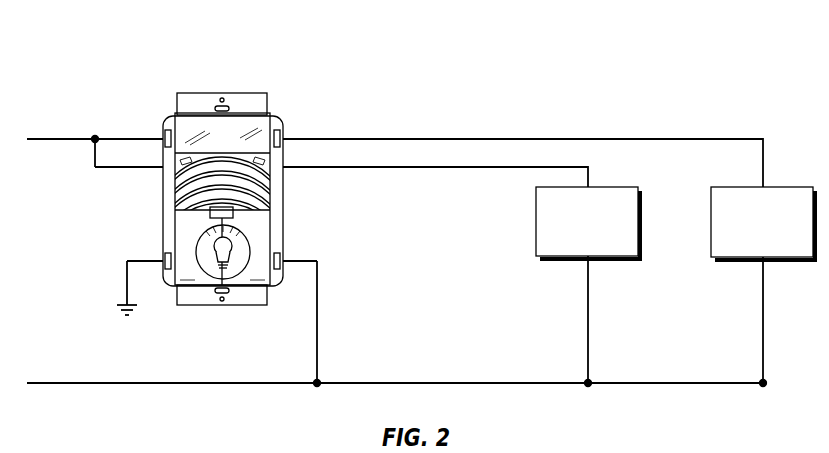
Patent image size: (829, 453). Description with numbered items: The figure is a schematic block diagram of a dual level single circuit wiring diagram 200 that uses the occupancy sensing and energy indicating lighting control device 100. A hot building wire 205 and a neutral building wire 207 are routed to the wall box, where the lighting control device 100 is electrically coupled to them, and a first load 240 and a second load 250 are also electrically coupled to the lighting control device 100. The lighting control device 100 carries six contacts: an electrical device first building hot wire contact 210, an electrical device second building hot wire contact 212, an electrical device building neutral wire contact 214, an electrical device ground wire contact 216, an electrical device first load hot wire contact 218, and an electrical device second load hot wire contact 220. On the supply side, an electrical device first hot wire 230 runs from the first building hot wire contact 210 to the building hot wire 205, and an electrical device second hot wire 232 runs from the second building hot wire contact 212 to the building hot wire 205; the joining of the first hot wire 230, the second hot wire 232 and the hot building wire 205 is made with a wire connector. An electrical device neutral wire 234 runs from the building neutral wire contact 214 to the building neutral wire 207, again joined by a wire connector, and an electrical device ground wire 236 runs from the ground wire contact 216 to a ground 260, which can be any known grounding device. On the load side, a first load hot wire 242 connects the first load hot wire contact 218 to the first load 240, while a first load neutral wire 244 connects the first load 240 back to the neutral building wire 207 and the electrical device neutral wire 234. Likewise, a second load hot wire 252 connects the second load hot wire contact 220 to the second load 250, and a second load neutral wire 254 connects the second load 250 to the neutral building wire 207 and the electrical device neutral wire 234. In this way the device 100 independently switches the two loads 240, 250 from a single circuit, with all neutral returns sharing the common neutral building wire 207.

The occupancy sensing and energy indicating lighting control device 100 is at (222, 93).
The dual level single circuit wiring diagram 200 is at (712, 47).
The hot building wire 205 is at (77, 138).
The neutral building wire 207 is at (198, 382).
The electrical device first building hot wire contact 210 is at (163, 133).
The electrical device second building hot wire contact 212 is at (162, 170).
The electrical device building neutral wire contact 214 is at (283, 258).
The electrical device ground wire contact 216 is at (163, 258).
The electrical device first load hot wire contact 218 is at (283, 137).
The electrical device second load hot wire contact 220 is at (283, 170).
The electrical device first hot wire 230 is at (113, 138).
The electrical device second hot wire 232 is at (95, 152).
The electrical device neutral wire 234 is at (318, 320).
The electrical device ground wire 236 is at (127, 290).
The first load 240 is at (782, 233).
The first load hot wire 242 is at (720, 138).
The first load neutral wire 244 is at (762, 320).
The second load 250 is at (607, 233).
The second load hot wire 252 is at (493, 168).
The second load neutral wire 254 is at (587, 320).
The ground 260 is at (118, 312).